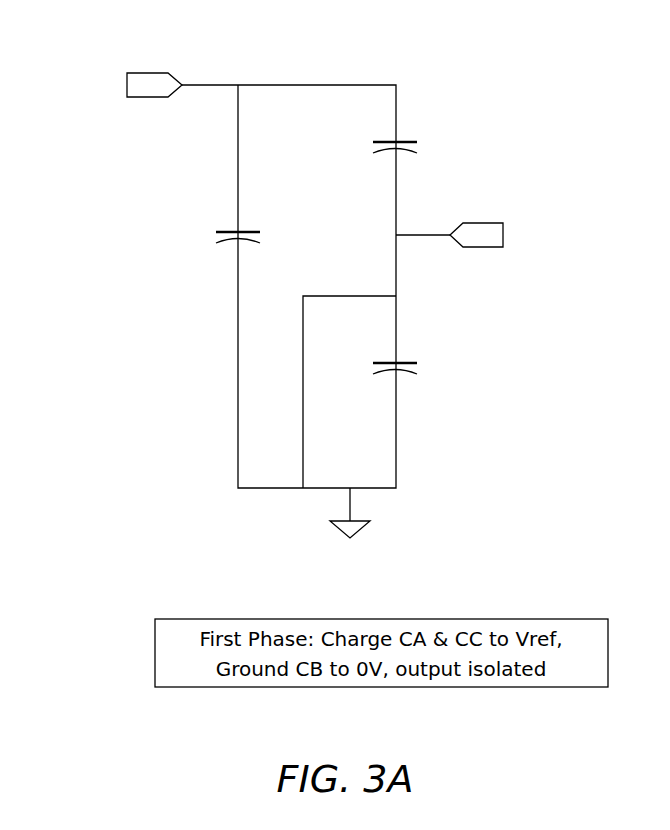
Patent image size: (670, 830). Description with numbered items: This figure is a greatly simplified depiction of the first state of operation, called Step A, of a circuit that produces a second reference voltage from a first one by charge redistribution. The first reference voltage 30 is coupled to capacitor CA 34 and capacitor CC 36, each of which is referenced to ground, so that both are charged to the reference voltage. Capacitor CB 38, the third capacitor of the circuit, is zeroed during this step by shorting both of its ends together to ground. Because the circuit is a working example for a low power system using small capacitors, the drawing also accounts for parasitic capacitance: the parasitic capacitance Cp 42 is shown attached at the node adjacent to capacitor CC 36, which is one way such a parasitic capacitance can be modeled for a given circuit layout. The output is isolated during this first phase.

The first reference 30 is at (153, 70).
The capacitor CA 34 is at (250, 218).
The capacitor CC 36 is at (418, 167).
The capacitor CB 38 is at (418, 387).
The parasitic capacitance 42 is at (482, 260).